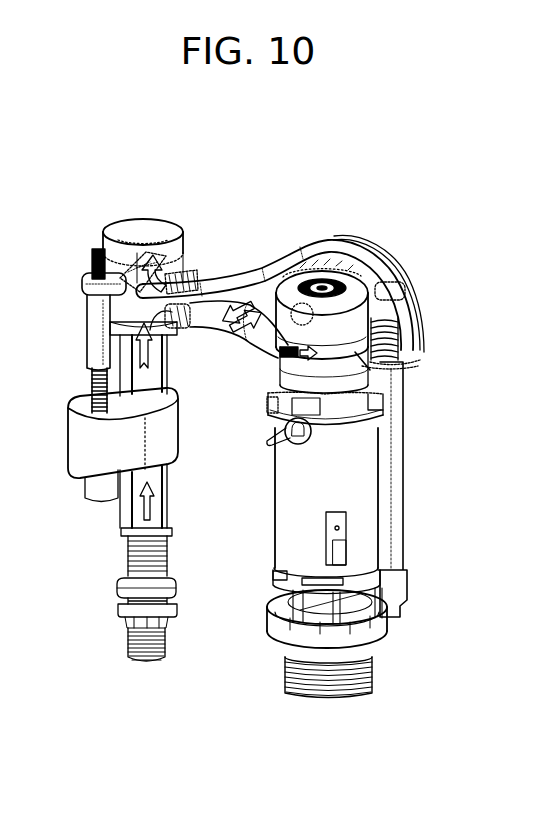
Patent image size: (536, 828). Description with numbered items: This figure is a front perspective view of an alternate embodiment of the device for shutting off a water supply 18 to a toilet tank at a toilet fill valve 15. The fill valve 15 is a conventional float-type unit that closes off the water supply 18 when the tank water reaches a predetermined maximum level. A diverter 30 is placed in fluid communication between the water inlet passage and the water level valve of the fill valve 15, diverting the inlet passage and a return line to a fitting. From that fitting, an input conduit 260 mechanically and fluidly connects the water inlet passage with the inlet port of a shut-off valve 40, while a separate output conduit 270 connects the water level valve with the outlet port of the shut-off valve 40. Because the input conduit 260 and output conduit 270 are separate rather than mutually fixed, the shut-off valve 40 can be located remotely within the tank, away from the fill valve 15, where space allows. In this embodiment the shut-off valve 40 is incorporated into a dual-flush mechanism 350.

The toilet fill valve 15 is at (145, 236).
The water supply 18 is at (150, 667).
The diverter 30 is at (178, 266).
The shut-off valve 40 is at (352, 355).
The input conduit 260 is at (236, 327).
The output conduit 270 is at (231, 297).
The dual-flush mechanism 350 is at (340, 485).